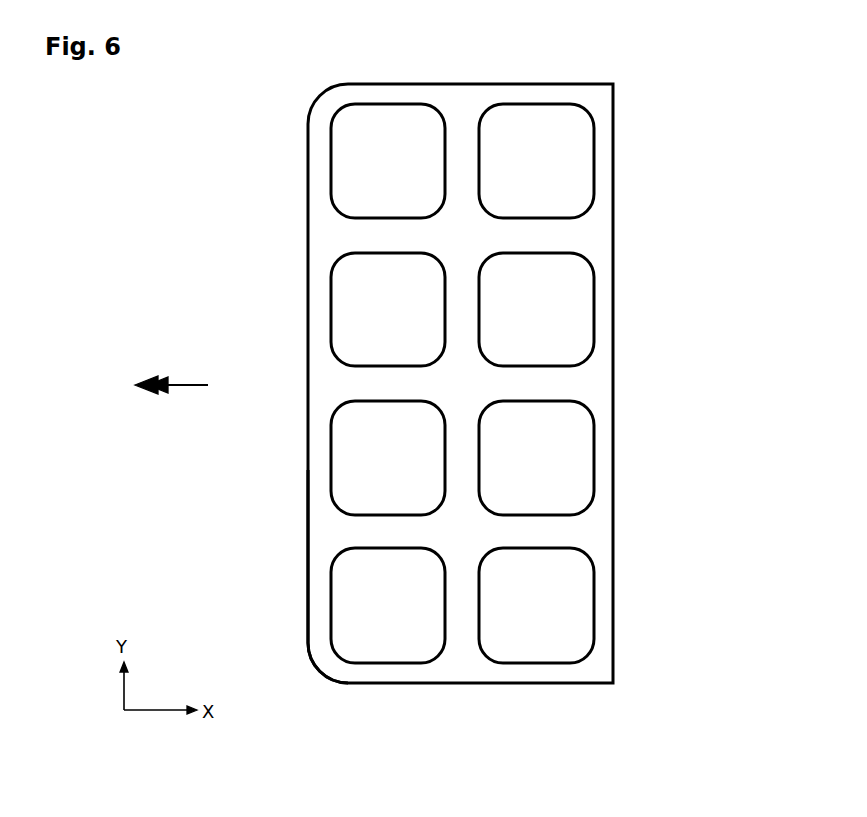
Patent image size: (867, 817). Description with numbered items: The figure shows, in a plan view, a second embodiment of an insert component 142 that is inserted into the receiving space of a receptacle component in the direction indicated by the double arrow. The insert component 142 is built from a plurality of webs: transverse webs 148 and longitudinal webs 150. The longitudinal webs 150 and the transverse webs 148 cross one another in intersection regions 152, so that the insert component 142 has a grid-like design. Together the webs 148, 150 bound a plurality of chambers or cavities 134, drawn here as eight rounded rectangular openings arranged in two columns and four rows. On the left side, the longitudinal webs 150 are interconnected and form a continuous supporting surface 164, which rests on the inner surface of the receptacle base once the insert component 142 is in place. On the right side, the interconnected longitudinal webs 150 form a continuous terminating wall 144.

The chamber 134 is at (532, 160).
The insert component 142 is at (292, 191).
The terminating wall 144 is at (617, 425).
The transverse web 148 is at (529, 237).
The longitudinal web 150 is at (320, 457).
The intersection region 152 is at (458, 238).
The supporting surface 164 is at (308, 547).